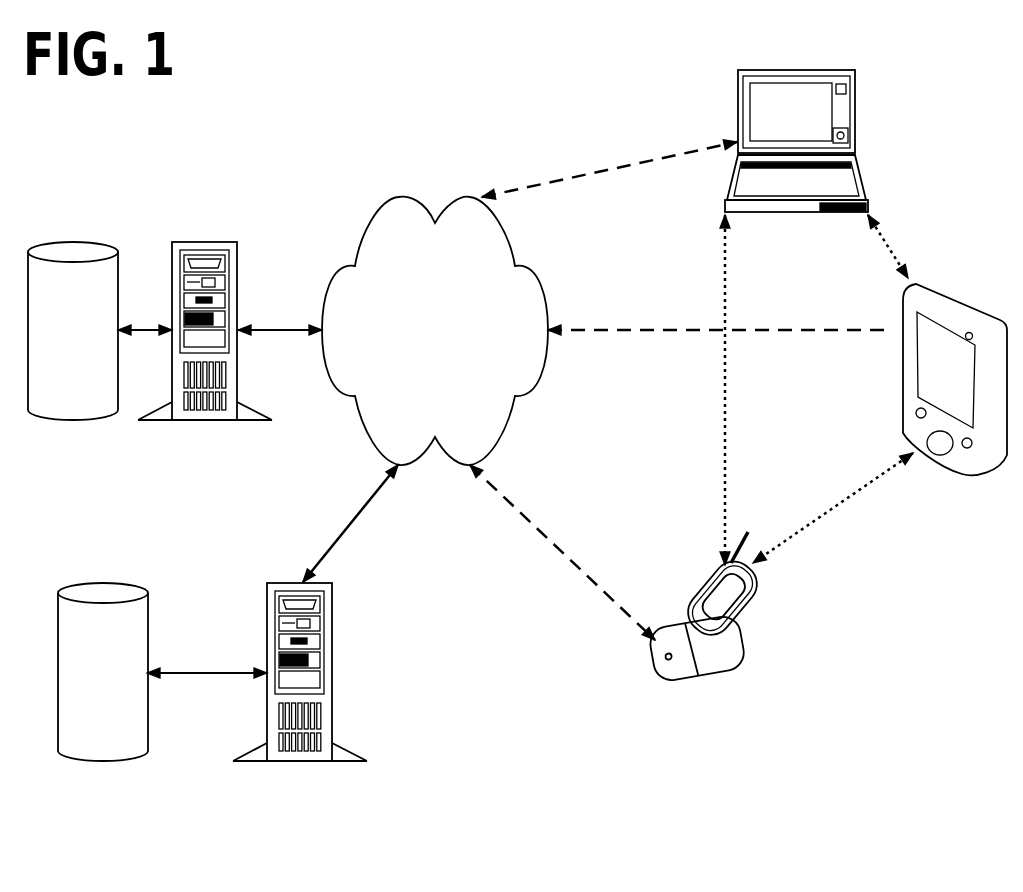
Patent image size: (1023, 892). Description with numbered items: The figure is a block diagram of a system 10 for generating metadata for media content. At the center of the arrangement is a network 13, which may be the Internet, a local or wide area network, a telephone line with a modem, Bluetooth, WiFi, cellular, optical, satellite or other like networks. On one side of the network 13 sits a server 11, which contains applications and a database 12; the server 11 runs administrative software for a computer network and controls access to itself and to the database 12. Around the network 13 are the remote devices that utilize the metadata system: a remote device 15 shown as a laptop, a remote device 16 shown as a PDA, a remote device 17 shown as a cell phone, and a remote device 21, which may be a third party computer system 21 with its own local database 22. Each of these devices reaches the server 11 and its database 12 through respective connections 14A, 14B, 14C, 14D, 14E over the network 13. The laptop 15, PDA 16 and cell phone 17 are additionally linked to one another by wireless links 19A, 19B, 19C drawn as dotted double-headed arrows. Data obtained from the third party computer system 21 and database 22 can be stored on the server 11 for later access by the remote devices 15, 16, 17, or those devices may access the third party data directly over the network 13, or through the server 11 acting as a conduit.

The system 10 is at (378, 143).
The server 11 is at (206, 242).
The database 12 is at (76, 242).
The network 13 is at (400, 197).
The connection 14A is at (266, 322).
The connection 14B is at (505, 190).
The connection 14C is at (590, 330).
The connection 14D is at (497, 483).
The connection 14E is at (352, 518).
The remote device 15 is at (800, 70).
The remote device 16 is at (942, 286).
The remote device 17 is at (770, 597).
The wireless link 19A is at (900, 268).
The wireless link 19B is at (727, 292).
The wireless link 19C is at (880, 478).
The third party computer system 21 is at (285, 583).
The local database 22 is at (108, 582).